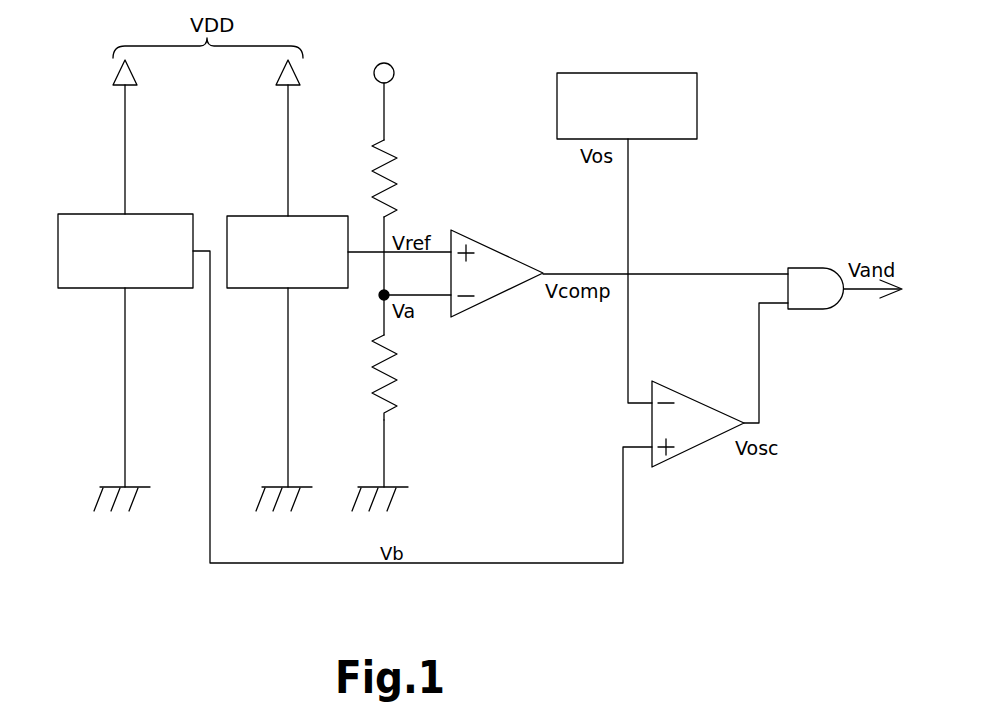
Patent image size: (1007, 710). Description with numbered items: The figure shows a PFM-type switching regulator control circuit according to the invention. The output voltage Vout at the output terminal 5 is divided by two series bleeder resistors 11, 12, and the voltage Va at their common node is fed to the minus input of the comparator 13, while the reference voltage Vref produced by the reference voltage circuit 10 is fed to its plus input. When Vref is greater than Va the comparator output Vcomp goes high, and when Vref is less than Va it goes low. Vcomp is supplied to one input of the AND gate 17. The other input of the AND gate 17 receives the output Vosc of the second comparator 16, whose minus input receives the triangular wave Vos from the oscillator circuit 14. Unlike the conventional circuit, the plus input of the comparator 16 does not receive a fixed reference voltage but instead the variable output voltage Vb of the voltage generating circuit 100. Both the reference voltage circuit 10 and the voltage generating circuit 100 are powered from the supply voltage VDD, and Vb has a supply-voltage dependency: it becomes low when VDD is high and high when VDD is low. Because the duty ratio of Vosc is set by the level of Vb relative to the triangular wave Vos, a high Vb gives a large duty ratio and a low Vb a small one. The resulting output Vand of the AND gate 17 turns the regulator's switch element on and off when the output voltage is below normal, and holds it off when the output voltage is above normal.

The output terminal 5 is at (395, 73).
The reference voltage circuit 10 is at (241, 216).
The bleeder resistor 11 is at (403, 164).
The bleeder resistor 12 is at (405, 383).
The comparator 13 is at (490, 255).
The oscillator circuit 14 is at (697, 104).
The comparator 16 is at (683, 448).
The AND gate 17 is at (813, 309).
The voltage generating circuit 100 is at (64, 214).